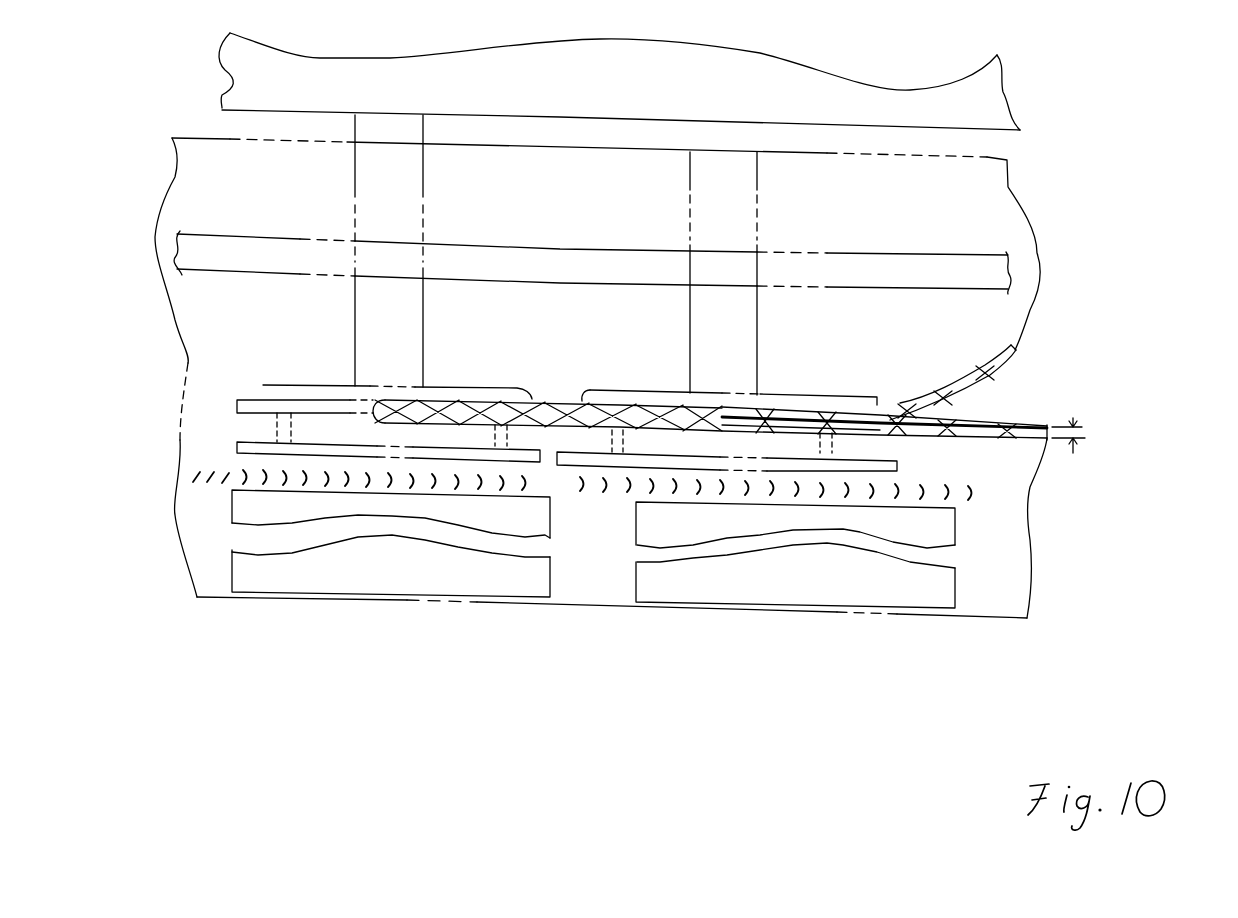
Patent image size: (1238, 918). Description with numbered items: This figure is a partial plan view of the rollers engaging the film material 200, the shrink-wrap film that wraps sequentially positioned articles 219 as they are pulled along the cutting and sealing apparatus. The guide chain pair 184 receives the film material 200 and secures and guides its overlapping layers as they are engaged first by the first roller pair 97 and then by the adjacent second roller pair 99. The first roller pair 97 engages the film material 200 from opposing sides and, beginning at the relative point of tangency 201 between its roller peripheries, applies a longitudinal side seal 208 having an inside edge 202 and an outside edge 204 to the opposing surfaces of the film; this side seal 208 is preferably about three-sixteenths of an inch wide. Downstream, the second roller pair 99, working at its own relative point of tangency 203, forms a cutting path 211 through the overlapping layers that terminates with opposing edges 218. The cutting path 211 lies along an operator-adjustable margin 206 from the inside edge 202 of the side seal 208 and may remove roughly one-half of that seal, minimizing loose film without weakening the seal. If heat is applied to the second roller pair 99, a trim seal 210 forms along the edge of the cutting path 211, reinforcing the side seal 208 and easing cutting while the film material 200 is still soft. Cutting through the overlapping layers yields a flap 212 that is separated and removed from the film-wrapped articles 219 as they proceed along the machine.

The opposing edges 218 is at (987, 157).
The guide chain pair 184 is at (987, 255).
The flap 212 is at (1040, 243).
The outside edge 204 is at (546, 400).
The trim seal 210 is at (1047, 426).
The operator-adjustable margin 206 is at (1073, 453).
The side seal 208 is at (433, 425).
The inside edge 202 is at (547, 430).
The cutting path 211 is at (950, 433).
The film material 200 is at (177, 537).
The articles 219 is at (260, 592).
The first roller pair 97 is at (323, 460).
The relative point of tangency 201 is at (373, 407).
The second roller pair 99 is at (620, 470).
The relative point of tangency 203 is at (735, 432).